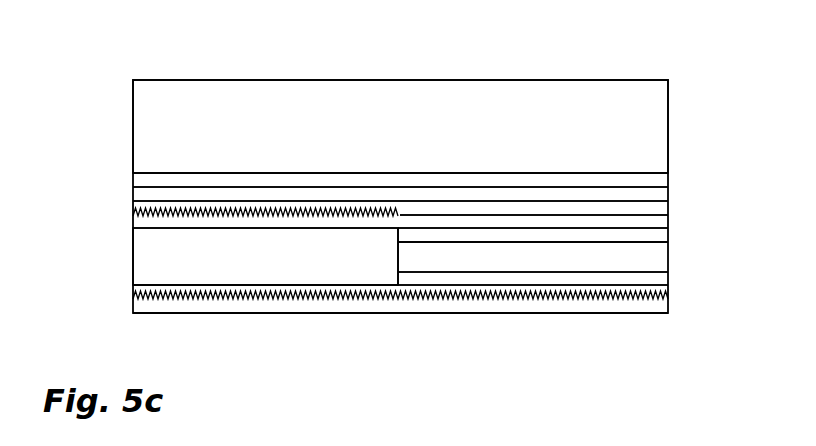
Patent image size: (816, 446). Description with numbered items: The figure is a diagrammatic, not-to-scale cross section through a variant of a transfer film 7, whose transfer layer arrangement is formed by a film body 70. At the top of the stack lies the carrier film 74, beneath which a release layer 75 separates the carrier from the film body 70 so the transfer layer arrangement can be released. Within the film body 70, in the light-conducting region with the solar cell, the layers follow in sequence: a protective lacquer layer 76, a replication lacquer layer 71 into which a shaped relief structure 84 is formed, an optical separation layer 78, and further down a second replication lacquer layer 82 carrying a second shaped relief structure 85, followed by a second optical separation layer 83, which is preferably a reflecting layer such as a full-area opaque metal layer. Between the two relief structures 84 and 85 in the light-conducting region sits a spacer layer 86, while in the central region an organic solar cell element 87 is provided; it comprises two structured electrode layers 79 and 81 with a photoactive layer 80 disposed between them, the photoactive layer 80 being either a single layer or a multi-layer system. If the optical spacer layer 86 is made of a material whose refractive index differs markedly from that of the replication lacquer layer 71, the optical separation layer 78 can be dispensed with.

The transfer film 7 is at (666, 50).
The film body 70 is at (125, 173).
The replication lacquer layer 71 is at (656, 210).
The carrier film 74 is at (656, 115).
The release layer 75 is at (656, 180).
The protective lacquer layer 76 is at (656, 193).
The optical separation layer 78 is at (656, 223).
The structured electrode layer 79 is at (656, 235).
The photoactive layer 80 is at (656, 259).
The structured electrode layer 81 is at (656, 279).
The second replication lacquer layer 82 is at (656, 288).
The second optical separation layer 83 is at (656, 307).
The relief structure 84 is at (323, 209).
The relief structure 85 is at (428, 302).
The spacer layer 86 is at (232, 270).
The organic solar cell element 87 is at (748, 230).